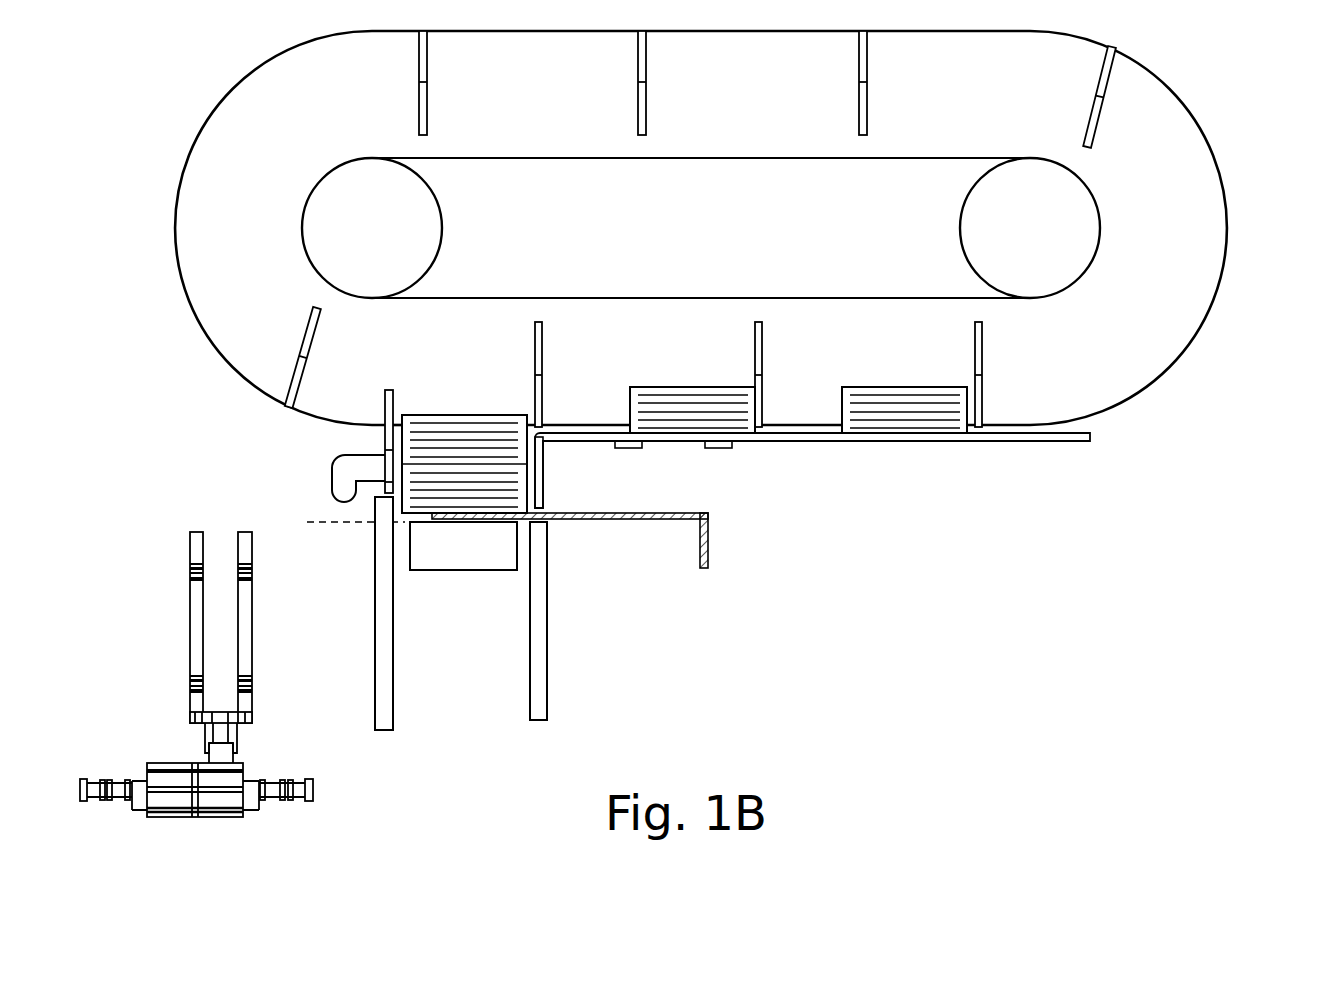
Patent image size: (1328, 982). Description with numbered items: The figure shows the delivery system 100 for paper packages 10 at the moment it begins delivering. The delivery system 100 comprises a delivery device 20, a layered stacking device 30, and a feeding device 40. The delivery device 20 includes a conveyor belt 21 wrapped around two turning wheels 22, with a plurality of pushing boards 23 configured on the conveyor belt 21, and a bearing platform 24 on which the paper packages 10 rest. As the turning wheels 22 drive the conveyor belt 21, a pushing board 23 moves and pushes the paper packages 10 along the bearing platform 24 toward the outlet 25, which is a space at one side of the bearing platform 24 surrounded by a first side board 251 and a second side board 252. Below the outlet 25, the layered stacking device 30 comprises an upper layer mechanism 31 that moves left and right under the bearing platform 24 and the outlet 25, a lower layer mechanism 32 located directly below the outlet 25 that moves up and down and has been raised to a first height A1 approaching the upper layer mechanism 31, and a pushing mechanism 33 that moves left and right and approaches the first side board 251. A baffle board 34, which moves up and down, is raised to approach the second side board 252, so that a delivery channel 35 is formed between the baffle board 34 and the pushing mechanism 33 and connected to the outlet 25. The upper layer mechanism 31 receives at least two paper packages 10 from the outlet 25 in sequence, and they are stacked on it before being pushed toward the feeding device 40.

The delivery system 100 is at (1327, 86).
The paper packages 10 is at (500, 436).
The delivery device 20 is at (190, 128).
The conveyor belt 21 is at (1200, 205).
The turning wheels 22 is at (414, 206).
The pushing boards 23 is at (538, 352).
The bearing platform 24 is at (1015, 442).
The outlet 25 is at (440, 406).
The first side board 251 is at (540, 470).
The second side board 252 is at (385, 434).
The layered stacking device 30 is at (372, 578).
The upper layer mechanism 31 is at (706, 531).
The lower layer mechanism 32 is at (463, 546).
The pushing mechanism 33 is at (540, 678).
The baffle board 34 is at (383, 660).
The delivery channel 35 is at (482, 630).
The feeding device 40 is at (197, 640).
The first height A1 is at (341, 524).